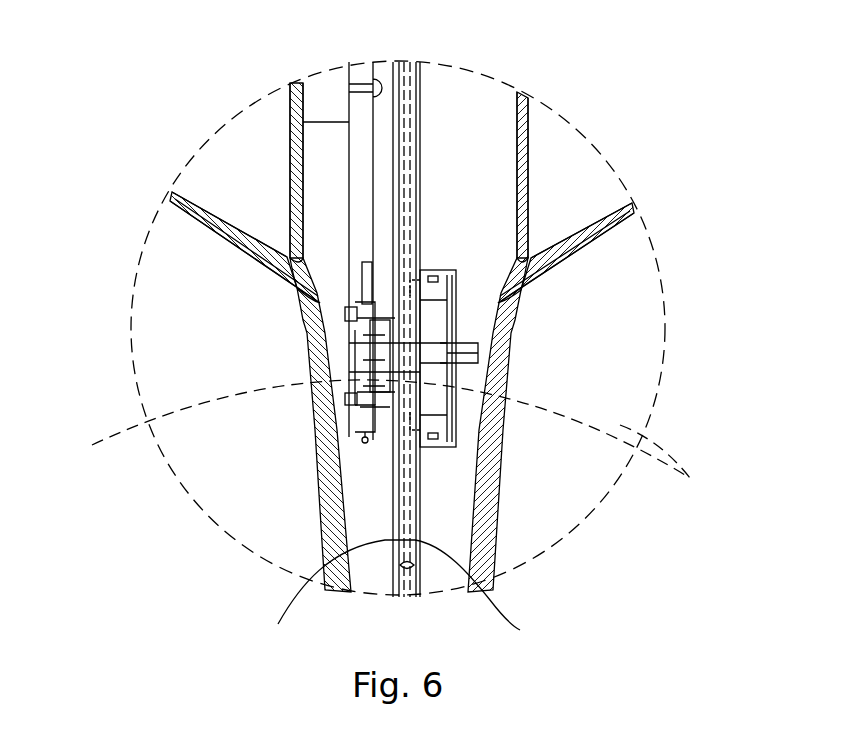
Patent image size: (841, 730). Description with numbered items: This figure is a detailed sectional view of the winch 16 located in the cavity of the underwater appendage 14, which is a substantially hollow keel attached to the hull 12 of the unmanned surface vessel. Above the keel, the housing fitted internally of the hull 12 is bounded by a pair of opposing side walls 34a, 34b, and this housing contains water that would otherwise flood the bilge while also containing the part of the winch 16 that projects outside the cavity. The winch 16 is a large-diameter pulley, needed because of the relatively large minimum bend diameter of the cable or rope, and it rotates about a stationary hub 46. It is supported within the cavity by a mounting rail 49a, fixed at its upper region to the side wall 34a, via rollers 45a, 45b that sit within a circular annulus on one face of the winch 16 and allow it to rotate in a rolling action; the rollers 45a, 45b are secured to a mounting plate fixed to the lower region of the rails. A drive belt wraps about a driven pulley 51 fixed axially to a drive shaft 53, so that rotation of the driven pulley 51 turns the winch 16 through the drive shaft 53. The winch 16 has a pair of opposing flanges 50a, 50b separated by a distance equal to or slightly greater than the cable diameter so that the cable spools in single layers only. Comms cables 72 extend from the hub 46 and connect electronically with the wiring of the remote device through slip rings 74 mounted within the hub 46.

The hull 12 is at (238, 252).
The underwater appendage 14 is at (298, 430).
The winch 16 is at (388, 155).
The side wall 34a is at (293, 157).
The side wall 34b is at (532, 167).
The roller 45a is at (388, 423).
The roller 45b is at (387, 306).
The stationary hub 46 is at (460, 304).
The mounting rail 49a is at (358, 200).
The flange 50a is at (312, 588).
The flange 50b is at (485, 591).
The driven pulley 51 is at (363, 336).
The drive shaft 53 is at (376, 429).
The cables 72 is at (463, 341).
The slip ring 74 is at (665, 463).